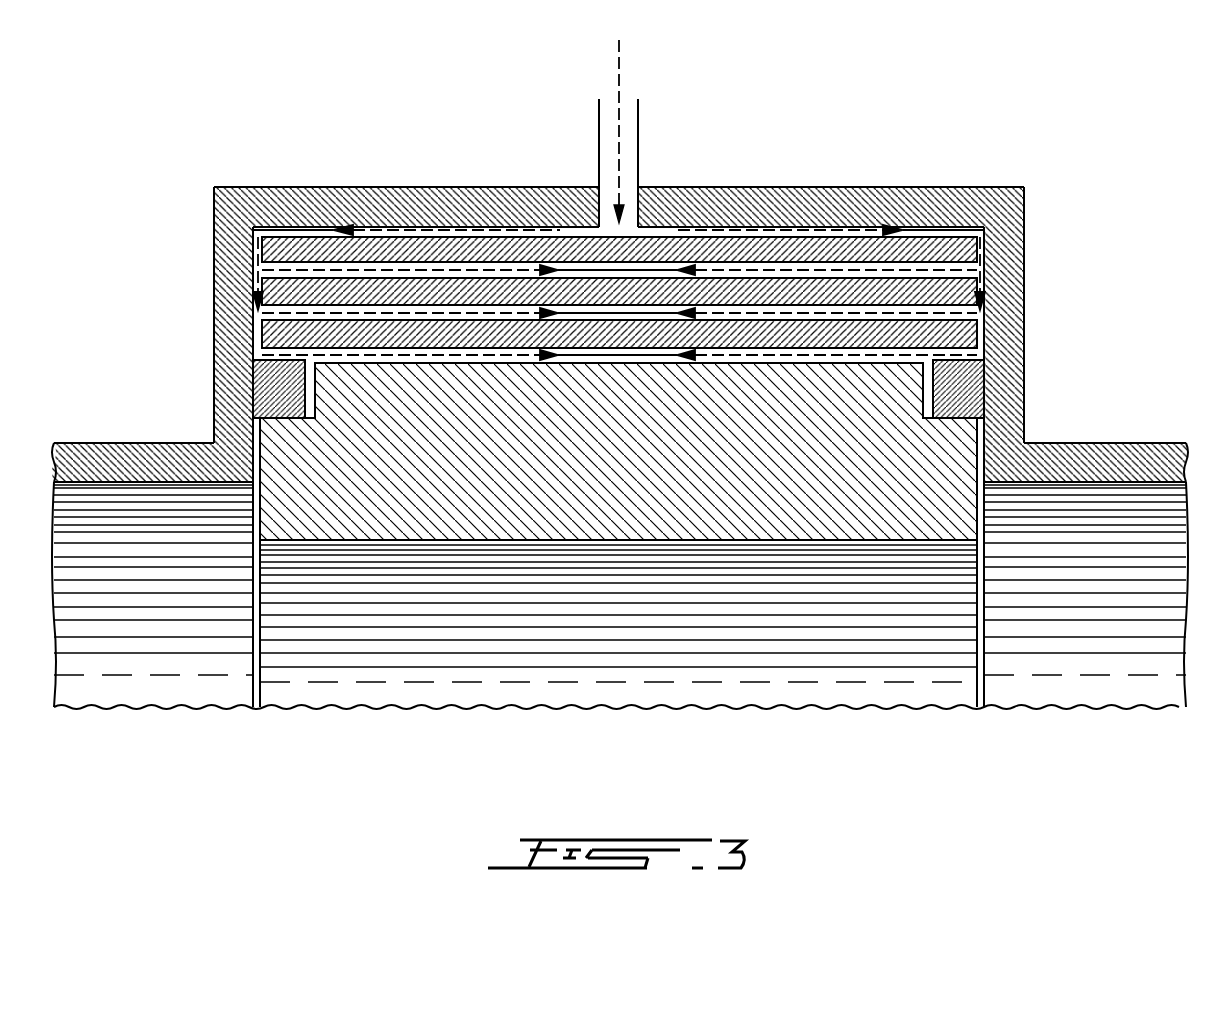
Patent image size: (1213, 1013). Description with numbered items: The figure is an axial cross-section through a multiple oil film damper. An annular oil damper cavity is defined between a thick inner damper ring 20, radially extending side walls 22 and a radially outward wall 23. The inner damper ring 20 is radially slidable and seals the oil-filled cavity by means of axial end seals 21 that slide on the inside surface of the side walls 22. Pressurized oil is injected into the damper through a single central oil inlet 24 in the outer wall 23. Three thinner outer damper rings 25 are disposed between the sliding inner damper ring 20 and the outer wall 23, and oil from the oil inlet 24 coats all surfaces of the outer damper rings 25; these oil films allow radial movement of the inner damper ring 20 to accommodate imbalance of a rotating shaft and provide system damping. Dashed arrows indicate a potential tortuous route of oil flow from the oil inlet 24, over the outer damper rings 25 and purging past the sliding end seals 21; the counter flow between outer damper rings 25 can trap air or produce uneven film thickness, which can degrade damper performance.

The inner damper ring 20 is at (663, 475).
The axial end seals 21 is at (278, 388).
The side walls 22 is at (230, 283).
The radially outward wall 23 is at (715, 187).
The oil inlet 24 is at (599, 128).
The outer damper rings 25 is at (305, 290).